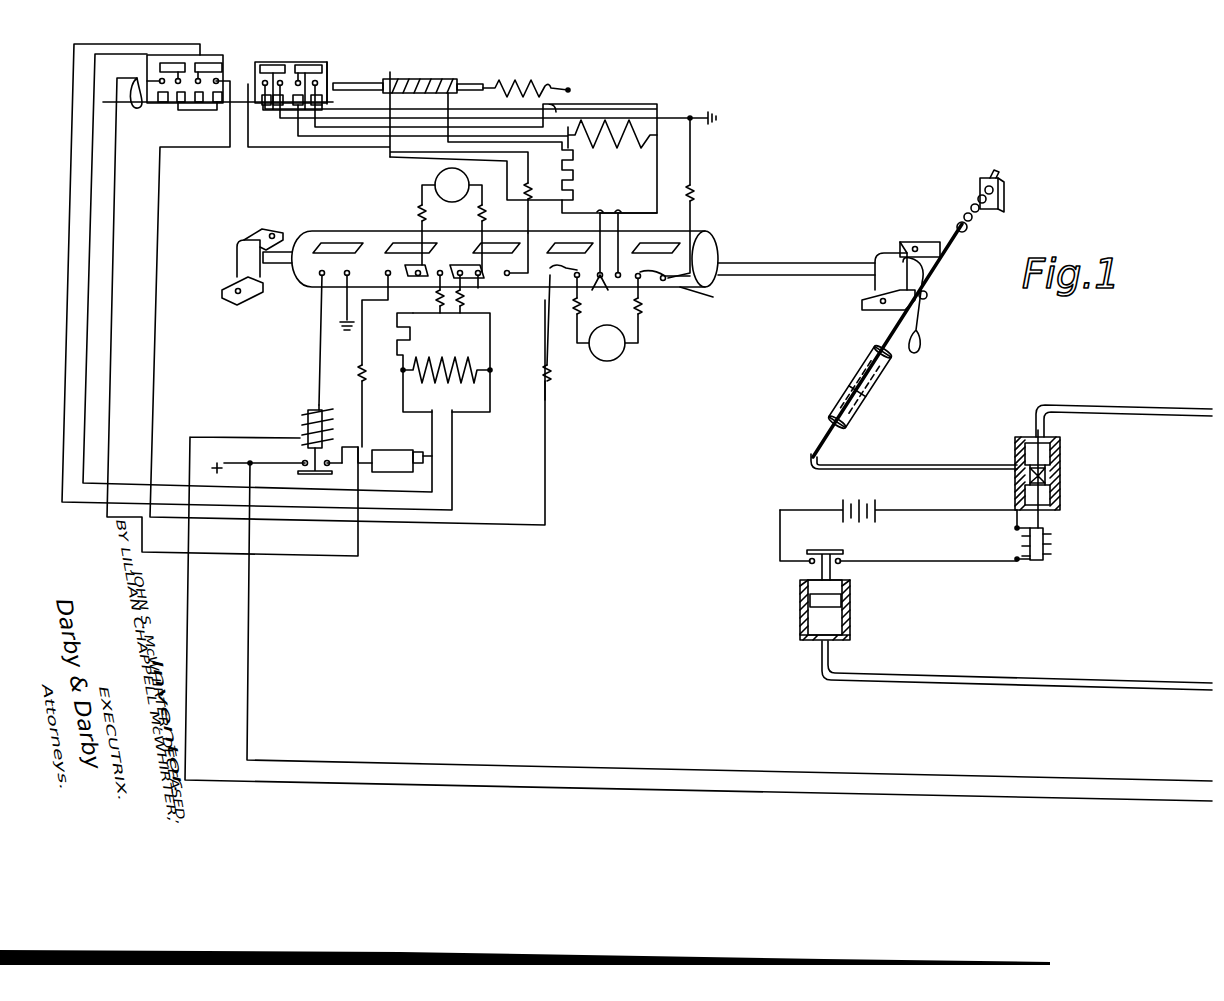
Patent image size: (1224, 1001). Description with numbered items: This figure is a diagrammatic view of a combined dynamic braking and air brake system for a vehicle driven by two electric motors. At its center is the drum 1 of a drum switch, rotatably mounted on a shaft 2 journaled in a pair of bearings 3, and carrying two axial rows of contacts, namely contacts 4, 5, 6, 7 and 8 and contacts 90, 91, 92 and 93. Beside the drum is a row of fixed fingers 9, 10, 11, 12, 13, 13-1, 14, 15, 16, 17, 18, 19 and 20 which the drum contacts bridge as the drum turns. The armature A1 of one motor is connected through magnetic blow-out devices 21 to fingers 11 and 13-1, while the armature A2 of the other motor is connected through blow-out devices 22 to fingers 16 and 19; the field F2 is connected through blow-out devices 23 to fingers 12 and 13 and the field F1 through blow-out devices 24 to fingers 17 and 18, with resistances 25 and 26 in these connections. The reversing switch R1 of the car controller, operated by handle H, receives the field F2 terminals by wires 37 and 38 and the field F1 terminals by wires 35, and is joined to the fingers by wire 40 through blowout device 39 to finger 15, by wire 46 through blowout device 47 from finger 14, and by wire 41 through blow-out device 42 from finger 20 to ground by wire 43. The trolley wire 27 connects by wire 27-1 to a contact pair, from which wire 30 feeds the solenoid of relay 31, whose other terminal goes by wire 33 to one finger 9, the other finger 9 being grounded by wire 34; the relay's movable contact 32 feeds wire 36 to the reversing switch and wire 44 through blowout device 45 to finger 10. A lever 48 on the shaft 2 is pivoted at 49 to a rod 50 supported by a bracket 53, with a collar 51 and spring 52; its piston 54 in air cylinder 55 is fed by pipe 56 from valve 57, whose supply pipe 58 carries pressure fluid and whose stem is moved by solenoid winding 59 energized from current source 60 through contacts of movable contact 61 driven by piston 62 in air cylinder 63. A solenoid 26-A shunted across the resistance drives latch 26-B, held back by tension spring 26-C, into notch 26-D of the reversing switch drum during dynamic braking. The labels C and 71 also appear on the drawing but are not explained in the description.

The drum 1 is at (302, 232).
The shaft 2 is at (778, 266).
The bearings 3 is at (262, 278).
The contact 4 is at (346, 242).
The contact 5 is at (408, 238).
The contact 6 is at (504, 242).
The contact 7 is at (568, 242).
The contact 8 is at (662, 232).
The fixed contacts 9 is at (330, 276).
The fixed contact 10 is at (370, 268).
The fixed contact 11 is at (387, 318).
The fixed contact 12 is at (428, 262).
The fixed contact 13 is at (462, 264).
The fixed contact 13-1 is at (497, 293).
The fixed contact 14 is at (493, 266).
The fixed contact 15 is at (548, 274).
The fixed contact 16 is at (572, 290).
The fixed contact 17 is at (604, 293).
The fixed contact 18 is at (609, 264).
The fixed contact 19 is at (642, 292).
The fixed contact 20 is at (665, 281).
The magnetic blow-out devices 21 is at (452, 238).
The magnetic blow-out devices 22 is at (634, 306).
The magnetic blow-out devices 23 is at (450, 308).
The magnetic blow-out devices 24 is at (611, 233).
The resistance 25 is at (413, 343).
The resistance 26 is at (575, 185).
The solenoid 26-A is at (418, 79).
The latch 26-B is at (344, 86).
The tension spring 26-C is at (548, 82).
The notch 26-D is at (330, 73).
The trolley circuit wire 27 is at (242, 462).
The wire 27-1 is at (249, 631).
The wire 30 is at (189, 630).
The relay 31 is at (324, 433).
The movable contact 32 is at (320, 473).
The wire 33 is at (320, 386).
The wire 34 is at (343, 320).
The wires 35 is at (461, 149).
The wire 36 is at (113, 255).
The wire 37 is at (434, 456).
The wire 38 is at (454, 483).
The magnetic blowout device 39 is at (544, 368).
The wire 40 is at (418, 524).
The wire 41 is at (694, 220).
The magnetic blow-out device 42 is at (694, 198).
The wire 43 is at (678, 119).
The wire 44 is at (360, 431).
The blowout device 45 is at (364, 380).
The wire 46 is at (527, 224).
The magnetic blowout device 47 is at (532, 195).
The lever 48 is at (920, 320).
The pivot 49 is at (928, 296).
The rod 50 is at (940, 268).
The collar 51 is at (970, 229).
The spring 52 is at (972, 207).
The bracket 53 is at (1003, 185).
The piston 54 is at (862, 410).
The air cylinder 55 is at (853, 416).
The pipe 56 is at (938, 466).
The valve 57 is at (1061, 470).
The fluid pressure supply pipe 58 is at (1122, 406).
The solenoid winding 59 is at (1063, 548).
The current source 60 is at (868, 522).
The movable contact 61 is at (843, 550).
The piston 62 is at (850, 610).
The air cylinder 63 is at (850, 639).
The pipe 71 is at (1120, 682).
The contact 90 is at (428, 294).
The contact 91 is at (470, 294).
The contact 92 is at (552, 267).
The contact 93 is at (712, 299).
The armature A1 is at (452, 186).
The armature A2 is at (608, 361).
The field F1 is at (610, 152).
The field F2 is at (452, 380).
The reversing switch R1 is at (185, 93).
The contactor C is at (183, 66).
The operating handle H is at (215, 95).